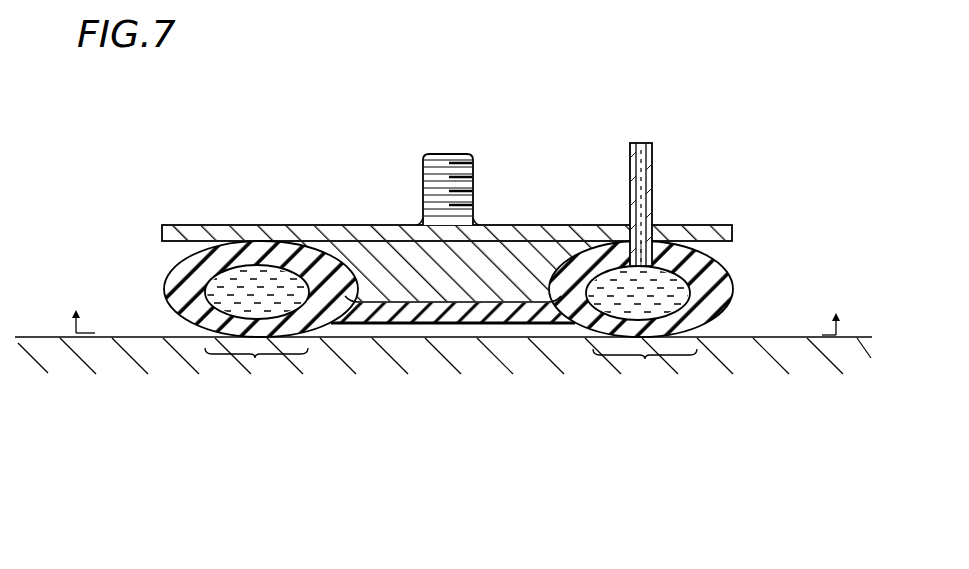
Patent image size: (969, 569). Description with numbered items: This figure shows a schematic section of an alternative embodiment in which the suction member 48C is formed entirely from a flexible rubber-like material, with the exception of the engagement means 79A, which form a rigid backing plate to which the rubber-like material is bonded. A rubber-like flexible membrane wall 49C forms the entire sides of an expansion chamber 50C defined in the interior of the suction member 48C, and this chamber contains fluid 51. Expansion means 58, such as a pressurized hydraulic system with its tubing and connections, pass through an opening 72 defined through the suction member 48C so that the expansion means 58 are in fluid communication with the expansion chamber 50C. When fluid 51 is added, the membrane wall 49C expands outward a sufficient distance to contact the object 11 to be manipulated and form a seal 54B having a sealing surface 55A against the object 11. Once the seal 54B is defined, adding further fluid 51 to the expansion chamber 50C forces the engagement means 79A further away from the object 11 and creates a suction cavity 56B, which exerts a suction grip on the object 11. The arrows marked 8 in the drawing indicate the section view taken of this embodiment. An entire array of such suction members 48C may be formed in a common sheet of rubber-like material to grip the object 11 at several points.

The suction member 48C is at (769, 170).
The flexible membrane wall 49C is at (718, 323).
The expansion chamber 50C is at (677, 290).
The fluid 51 is at (213, 292).
The seal 54B is at (255, 358).
The sealing surface 55A is at (215, 338).
The suction cavity 56B is at (434, 333).
The expansion means 58 is at (611, 158).
The opening 72 is at (648, 232).
The engagement means 79A is at (423, 162).
The section line of FIG. 8 is at (456, 311).
The object 11 is at (863, 337).